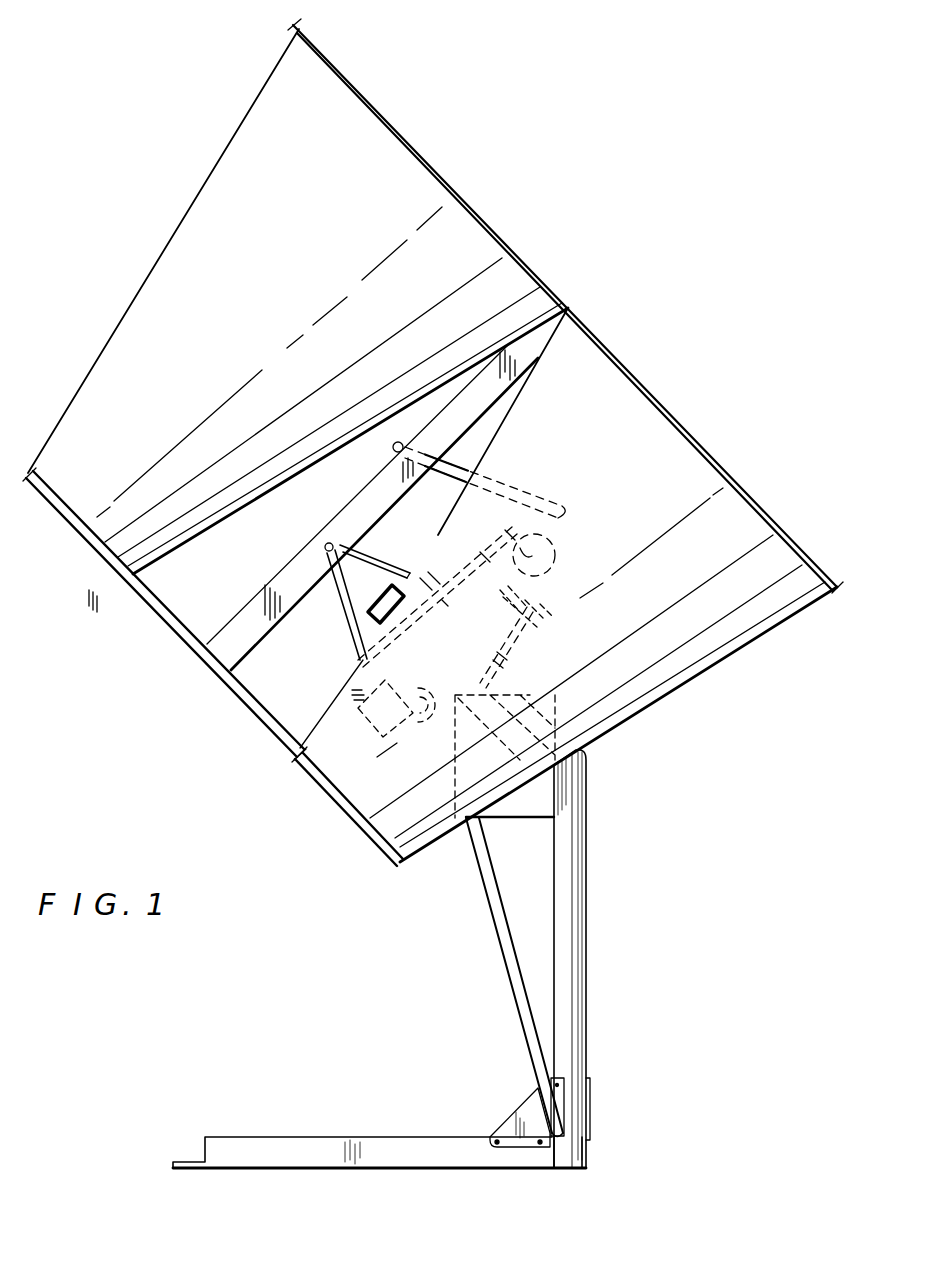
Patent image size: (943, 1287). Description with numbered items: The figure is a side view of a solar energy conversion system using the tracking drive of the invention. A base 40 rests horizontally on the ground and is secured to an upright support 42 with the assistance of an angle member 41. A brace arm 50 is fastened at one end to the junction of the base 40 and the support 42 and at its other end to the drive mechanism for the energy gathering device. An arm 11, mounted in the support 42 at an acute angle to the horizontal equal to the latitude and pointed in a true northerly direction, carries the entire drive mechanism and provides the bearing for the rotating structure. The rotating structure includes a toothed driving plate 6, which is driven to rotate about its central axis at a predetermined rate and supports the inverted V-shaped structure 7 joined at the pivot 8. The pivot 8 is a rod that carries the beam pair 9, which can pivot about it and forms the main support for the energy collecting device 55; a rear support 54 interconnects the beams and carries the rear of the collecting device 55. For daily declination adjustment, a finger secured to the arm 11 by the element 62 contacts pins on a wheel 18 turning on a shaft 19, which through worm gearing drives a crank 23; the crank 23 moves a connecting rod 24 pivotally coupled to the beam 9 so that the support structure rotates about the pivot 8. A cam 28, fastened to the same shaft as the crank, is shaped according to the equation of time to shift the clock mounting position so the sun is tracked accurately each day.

The energy collecting device 55 is at (172, 272).
The support 54 is at (208, 652).
The beam pair 9 is at (382, 482).
The pivot 8 is at (325, 548).
The inverted V-shaped structure 7 is at (350, 607).
The driving plate 6 is at (356, 686).
The connecting rod 24 is at (512, 493).
The cam 28 is at (500, 542).
The crank 23 is at (543, 550).
The shaft 19 is at (518, 614).
The wheel 18 is at (541, 615).
The element 62 is at (497, 678).
The arm 11 is at (457, 693).
The arm 50 is at (512, 954).
The support 42 is at (576, 957).
The angle member 41 is at (528, 1110).
The base 40 is at (312, 1143).